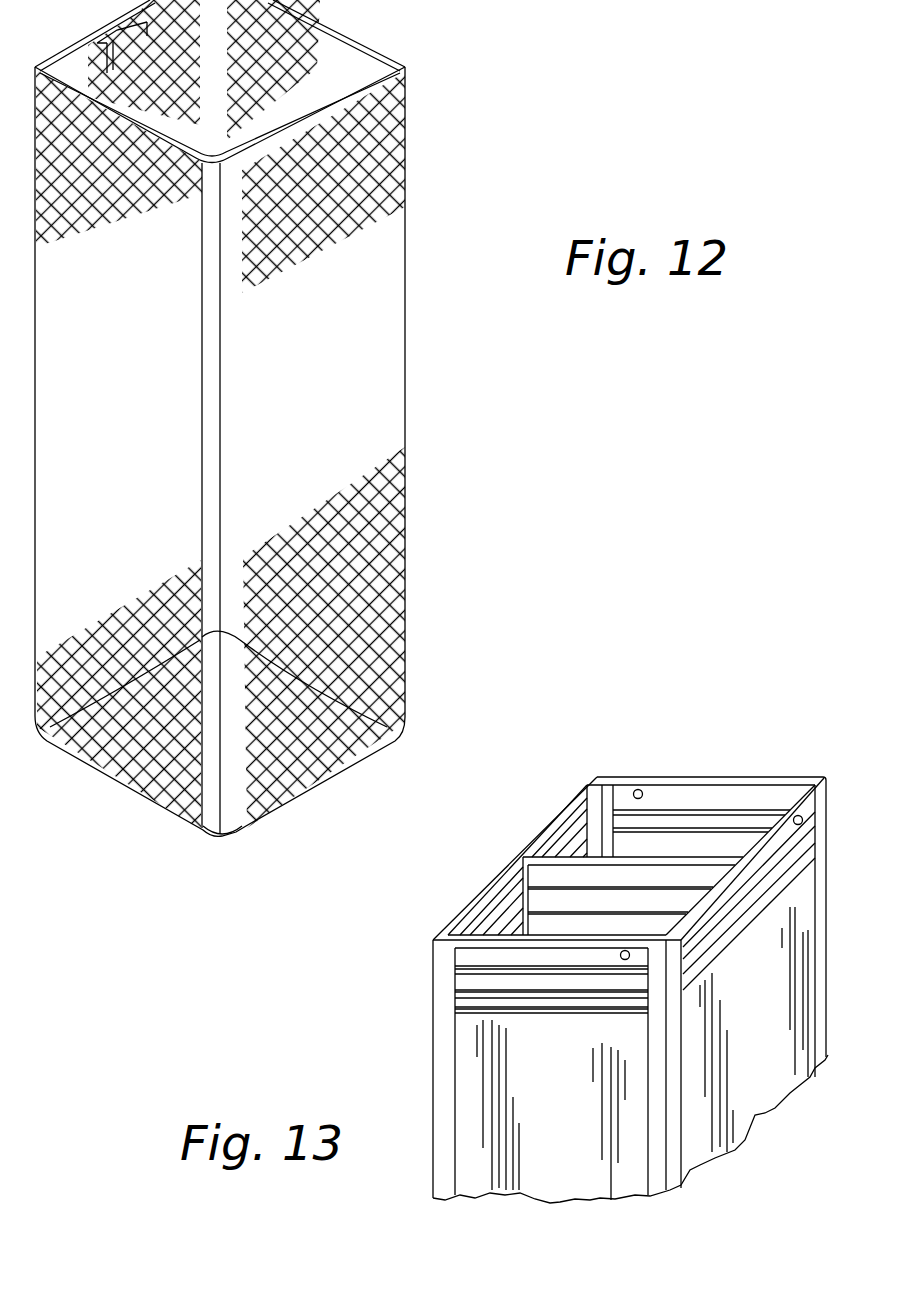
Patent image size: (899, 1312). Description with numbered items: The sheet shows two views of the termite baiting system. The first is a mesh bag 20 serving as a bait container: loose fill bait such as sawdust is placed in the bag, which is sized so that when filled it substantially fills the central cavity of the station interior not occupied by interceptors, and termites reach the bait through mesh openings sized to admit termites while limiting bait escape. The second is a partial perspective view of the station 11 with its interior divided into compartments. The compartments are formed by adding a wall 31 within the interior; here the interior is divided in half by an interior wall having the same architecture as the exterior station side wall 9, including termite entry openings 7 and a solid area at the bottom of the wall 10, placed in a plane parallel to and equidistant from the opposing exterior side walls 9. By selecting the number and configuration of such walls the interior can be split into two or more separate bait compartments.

In FIG. 12, the mesh enclosure 20 is at (417, 113).
In FIG. 13, the station side wall 9 is at (693, 785).
In FIG. 13, the wall 31 is at (563, 860).
In FIG. 13, the termite entry opening 7 is at (560, 883).
In FIG. 13, the solid area at bottom of wall 10 is at (483, 957).
In FIG. 13, the station 11 is at (416, 1011).